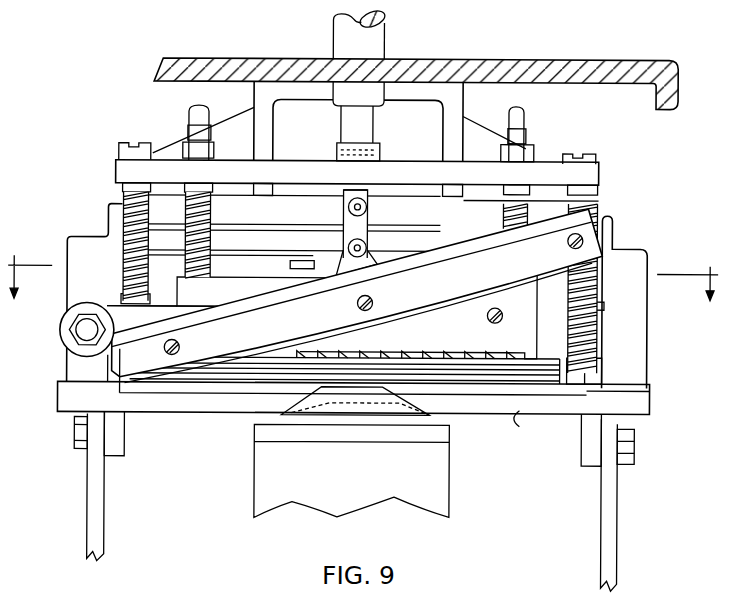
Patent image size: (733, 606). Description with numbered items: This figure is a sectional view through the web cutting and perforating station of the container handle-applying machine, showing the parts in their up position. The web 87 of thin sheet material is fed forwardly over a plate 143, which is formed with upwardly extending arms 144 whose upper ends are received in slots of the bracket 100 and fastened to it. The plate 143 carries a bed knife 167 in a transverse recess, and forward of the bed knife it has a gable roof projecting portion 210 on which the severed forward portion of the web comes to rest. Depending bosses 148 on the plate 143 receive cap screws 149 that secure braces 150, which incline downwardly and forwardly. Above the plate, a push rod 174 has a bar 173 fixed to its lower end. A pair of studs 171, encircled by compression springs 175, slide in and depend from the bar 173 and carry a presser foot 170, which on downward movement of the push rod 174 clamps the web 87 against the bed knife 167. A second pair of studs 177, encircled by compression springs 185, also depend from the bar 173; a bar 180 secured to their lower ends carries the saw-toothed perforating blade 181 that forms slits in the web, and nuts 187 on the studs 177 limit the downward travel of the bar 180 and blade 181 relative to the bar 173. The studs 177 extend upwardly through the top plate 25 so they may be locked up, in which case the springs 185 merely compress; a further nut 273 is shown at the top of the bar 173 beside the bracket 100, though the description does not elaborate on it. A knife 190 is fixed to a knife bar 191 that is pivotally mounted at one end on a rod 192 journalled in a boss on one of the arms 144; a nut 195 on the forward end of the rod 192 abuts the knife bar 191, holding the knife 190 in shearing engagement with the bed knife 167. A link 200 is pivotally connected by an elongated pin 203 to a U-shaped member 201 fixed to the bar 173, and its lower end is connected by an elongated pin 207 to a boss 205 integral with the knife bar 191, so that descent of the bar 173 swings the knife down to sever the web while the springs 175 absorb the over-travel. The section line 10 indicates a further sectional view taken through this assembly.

The top plate 25 is at (545, 73).
The push rod 174 is at (366, 129).
The studs 177 is at (201, 117).
The nuts 187 is at (208, 141).
The bracket 100 is at (541, 158).
The lock nut 273 is at (596, 154).
The bar 173 is at (592, 178).
The U-shaped member 201 is at (370, 198).
The elongated pin 203 is at (347, 208).
The link 200 is at (368, 225).
The elongated pin 207 is at (346, 247).
The boss 205 is at (370, 255).
The compression springs 185 is at (215, 217).
The studs 171 is at (114, 215).
The arms 144 is at (109, 267).
The compression springs 175 is at (122, 275).
The bar 180 is at (215, 280).
The section line 10 is at (365, 292).
The nut 195 is at (72, 333).
The rod 192 is at (78, 345).
The knife bar 191 is at (160, 332).
The knife 190 is at (323, 329).
The perforating blade 181 is at (476, 344).
The presser foot 170 is at (590, 378).
The bed knife 167 is at (648, 398).
The cap screws 149 is at (75, 432).
The depending bosses 148 is at (118, 443).
The braces 150 is at (96, 489).
The gable roof projecting portion 210 is at (355, 400).
The web 87 is at (488, 381).
The plate 143 is at (536, 428).